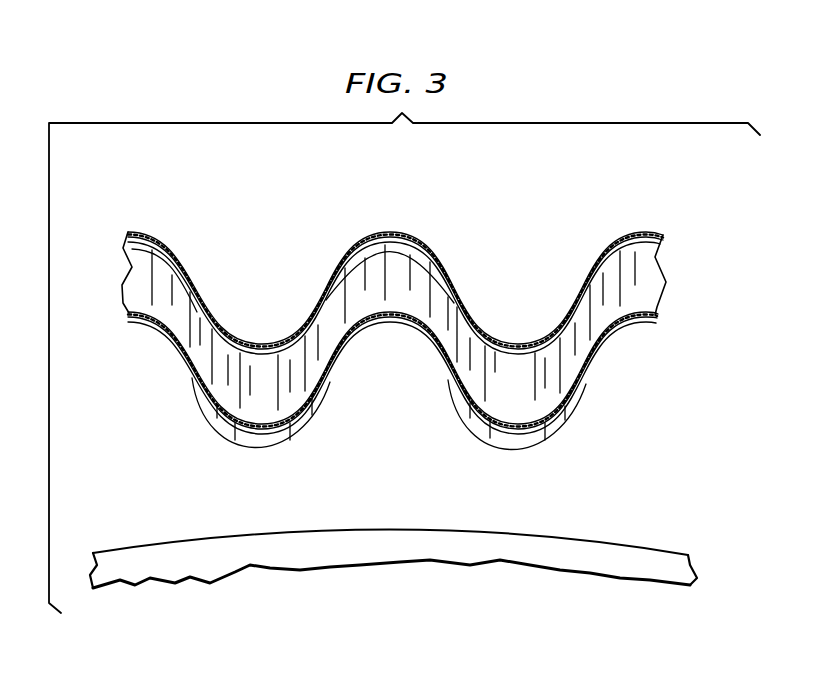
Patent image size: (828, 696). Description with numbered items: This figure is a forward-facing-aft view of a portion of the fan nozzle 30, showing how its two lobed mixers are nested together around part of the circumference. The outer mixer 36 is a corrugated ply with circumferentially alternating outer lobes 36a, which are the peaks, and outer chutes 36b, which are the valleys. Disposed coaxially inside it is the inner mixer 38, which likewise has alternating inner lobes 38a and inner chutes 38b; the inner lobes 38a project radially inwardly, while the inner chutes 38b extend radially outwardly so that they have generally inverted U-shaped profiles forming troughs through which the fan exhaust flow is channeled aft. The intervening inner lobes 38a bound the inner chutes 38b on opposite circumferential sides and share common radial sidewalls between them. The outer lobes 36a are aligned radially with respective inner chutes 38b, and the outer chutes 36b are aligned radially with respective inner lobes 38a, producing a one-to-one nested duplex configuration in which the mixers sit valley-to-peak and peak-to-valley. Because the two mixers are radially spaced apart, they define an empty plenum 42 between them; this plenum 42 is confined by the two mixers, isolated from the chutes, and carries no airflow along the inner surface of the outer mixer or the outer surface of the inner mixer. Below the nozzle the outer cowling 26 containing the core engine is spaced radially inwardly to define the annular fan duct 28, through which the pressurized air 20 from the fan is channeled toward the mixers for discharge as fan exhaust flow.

The pressurized air 20 is at (438, 200).
The outer cowling 26 is at (424, 557).
The fan duct 28 is at (212, 501).
The fan nozzle 30 is at (660, 201).
The outer lobed mixer 36 is at (138, 224).
The outer lobes 36a is at (389, 231).
The outer chutes 36b is at (268, 342).
The inner lobed mixer 38 is at (136, 303).
The inner lobes 38a is at (260, 427).
The inner chutes 38b is at (420, 319).
The plenum 42 is at (530, 395).